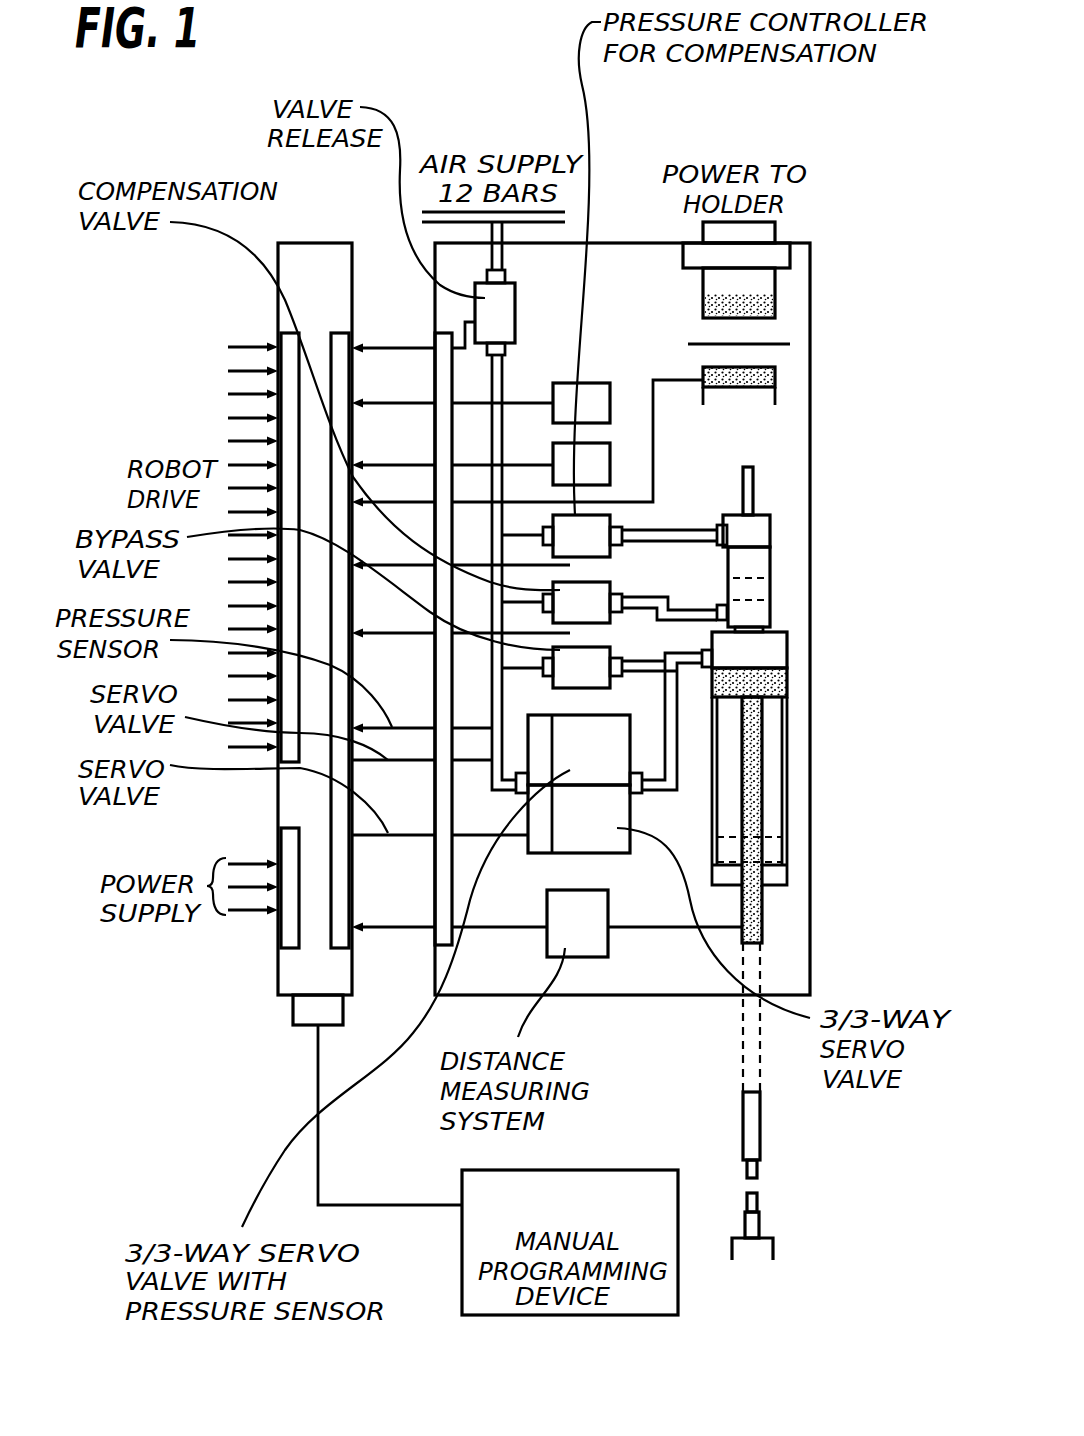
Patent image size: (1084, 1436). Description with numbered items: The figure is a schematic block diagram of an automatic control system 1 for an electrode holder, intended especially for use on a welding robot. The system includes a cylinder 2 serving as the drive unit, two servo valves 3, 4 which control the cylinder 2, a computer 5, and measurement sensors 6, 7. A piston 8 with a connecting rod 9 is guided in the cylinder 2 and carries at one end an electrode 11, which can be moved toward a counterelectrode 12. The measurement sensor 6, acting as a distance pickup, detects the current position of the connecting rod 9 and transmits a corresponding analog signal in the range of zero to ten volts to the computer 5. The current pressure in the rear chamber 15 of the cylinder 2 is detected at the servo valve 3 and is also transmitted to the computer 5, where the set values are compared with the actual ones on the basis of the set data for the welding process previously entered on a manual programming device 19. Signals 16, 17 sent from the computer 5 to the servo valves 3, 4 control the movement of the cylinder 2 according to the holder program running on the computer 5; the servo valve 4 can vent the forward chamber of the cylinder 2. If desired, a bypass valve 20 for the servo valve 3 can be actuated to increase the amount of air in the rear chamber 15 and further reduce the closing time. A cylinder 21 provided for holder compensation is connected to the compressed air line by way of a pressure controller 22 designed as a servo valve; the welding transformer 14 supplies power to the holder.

The automatic control system 1 is at (258, 812).
The cylinder 2 is at (790, 757).
The servo valve 3 is at (573, 754).
The servo valve 4 is at (585, 813).
The computer 5 is at (303, 260).
The measurement sensor 6 is at (577, 923).
The measurement sensor 7 is at (415, 727).
The piston 8 is at (790, 680).
The connecting rod 9 is at (752, 903).
The electrode 11 is at (757, 1173).
The counterelectrode 12 is at (757, 1200).
The welding transformer 14 is at (728, 343).
The rear chamber 15 is at (790, 640).
The signal 16 is at (397, 760).
The signal 17 is at (405, 838).
The manual programming device 19 is at (570, 1242).
The bypass valve 20 is at (622, 718).
The cylinder 21 is at (770, 572).
The pressure controller 22 is at (630, 536).